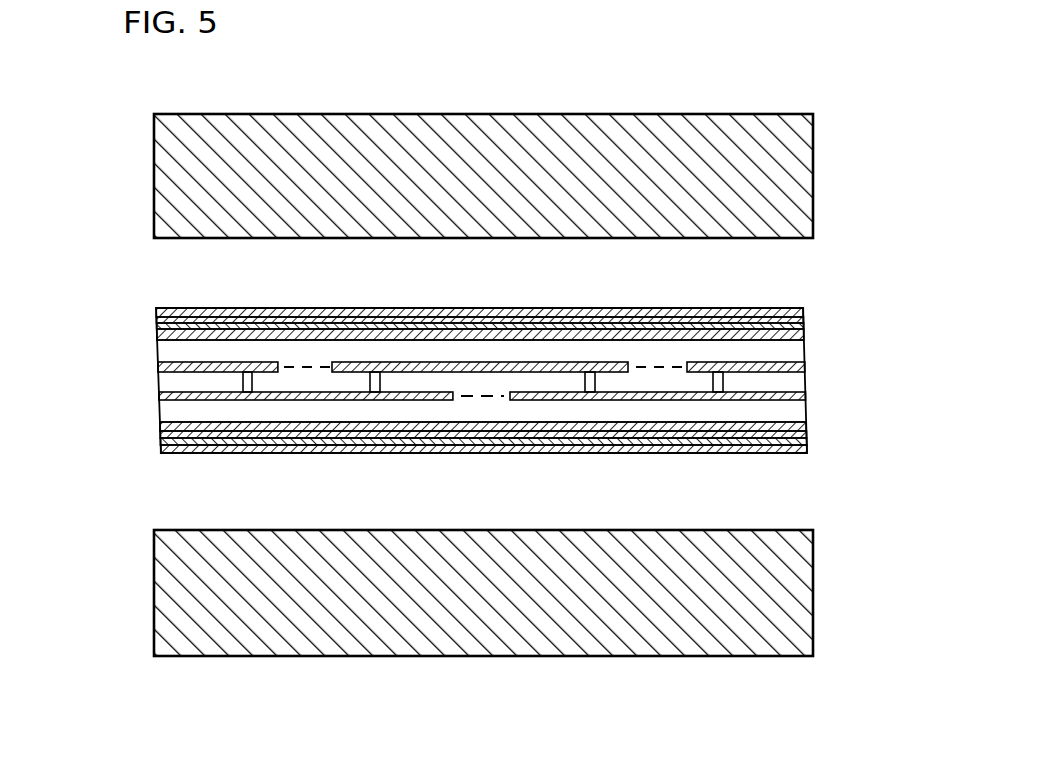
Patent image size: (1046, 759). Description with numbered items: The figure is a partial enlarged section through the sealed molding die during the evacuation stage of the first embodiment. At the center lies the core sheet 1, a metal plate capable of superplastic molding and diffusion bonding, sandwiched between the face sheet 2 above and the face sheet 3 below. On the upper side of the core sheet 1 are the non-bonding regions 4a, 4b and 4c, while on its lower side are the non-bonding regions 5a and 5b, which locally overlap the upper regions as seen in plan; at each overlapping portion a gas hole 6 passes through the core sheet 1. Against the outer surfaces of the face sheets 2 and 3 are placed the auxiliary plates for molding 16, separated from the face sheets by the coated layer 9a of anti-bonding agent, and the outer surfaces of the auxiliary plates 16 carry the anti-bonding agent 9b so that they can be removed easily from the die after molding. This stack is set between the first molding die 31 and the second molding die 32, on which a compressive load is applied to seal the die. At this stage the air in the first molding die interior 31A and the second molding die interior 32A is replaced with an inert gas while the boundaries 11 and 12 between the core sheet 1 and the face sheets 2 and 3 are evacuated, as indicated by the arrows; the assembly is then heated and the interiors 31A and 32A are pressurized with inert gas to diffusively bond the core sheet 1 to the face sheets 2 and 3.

The core sheet 1 is at (793, 383).
The face sheet 2 is at (790, 350).
The face sheet 3 is at (795, 408).
The non-bonding region 4a is at (206, 372).
The non-bonding region 4b is at (478, 372).
The non-bonding region 4c is at (795, 373).
The non-bonding region 5a is at (313, 401).
The non-bonding region 5b is at (557, 401).
The gas hole 6 is at (254, 379).
The coated layer 9a is at (606, 335).
The anti-bonding agent 9b is at (716, 313).
The auxiliary plate for molding 16 is at (652, 326).
The boundary 11 is at (148, 368).
The boundary 12 is at (150, 398).
The first molding die 31 is at (800, 130).
The first molding die interior 31A is at (788, 255).
The second molding die 32 is at (795, 595).
The second molding die interior 32A is at (772, 492).